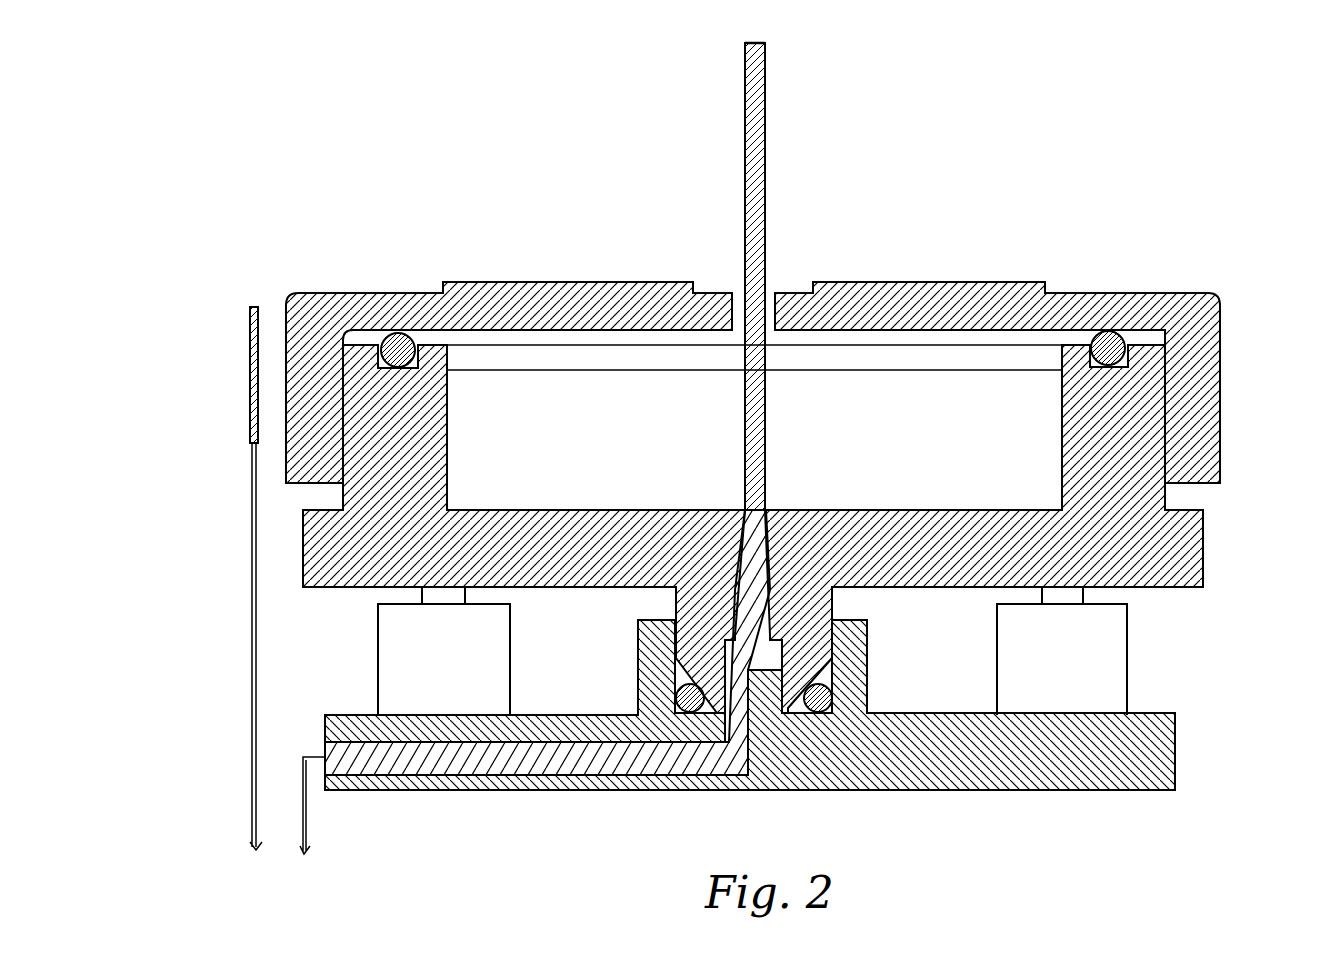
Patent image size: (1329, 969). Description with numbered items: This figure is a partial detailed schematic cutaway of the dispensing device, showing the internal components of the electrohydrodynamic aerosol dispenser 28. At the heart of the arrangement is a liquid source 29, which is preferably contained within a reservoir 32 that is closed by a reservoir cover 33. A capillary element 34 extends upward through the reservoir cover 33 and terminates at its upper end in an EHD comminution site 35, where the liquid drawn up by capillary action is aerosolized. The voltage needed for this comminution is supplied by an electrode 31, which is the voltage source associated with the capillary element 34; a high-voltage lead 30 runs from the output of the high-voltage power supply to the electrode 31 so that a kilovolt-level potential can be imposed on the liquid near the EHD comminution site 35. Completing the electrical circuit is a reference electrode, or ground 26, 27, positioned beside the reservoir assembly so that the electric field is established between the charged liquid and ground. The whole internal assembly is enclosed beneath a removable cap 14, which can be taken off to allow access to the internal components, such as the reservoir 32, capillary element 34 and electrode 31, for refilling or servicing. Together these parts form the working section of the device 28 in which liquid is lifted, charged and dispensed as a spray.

The removable cap 14 is at (1222, 345).
The reference electrode 26 is at (250, 333).
The ground 27 is at (252, 712).
The transducer assembly 28 is at (266, 176).
The liquid source 29 is at (980, 395).
The high-voltage lead 30 is at (307, 812).
The electrode 31 is at (598, 405).
The reservoir 32 is at (1167, 498).
The reservoir cover 33 is at (547, 282).
The capillary element 34 is at (765, 97).
The EHD comminution site 35 is at (758, 36).